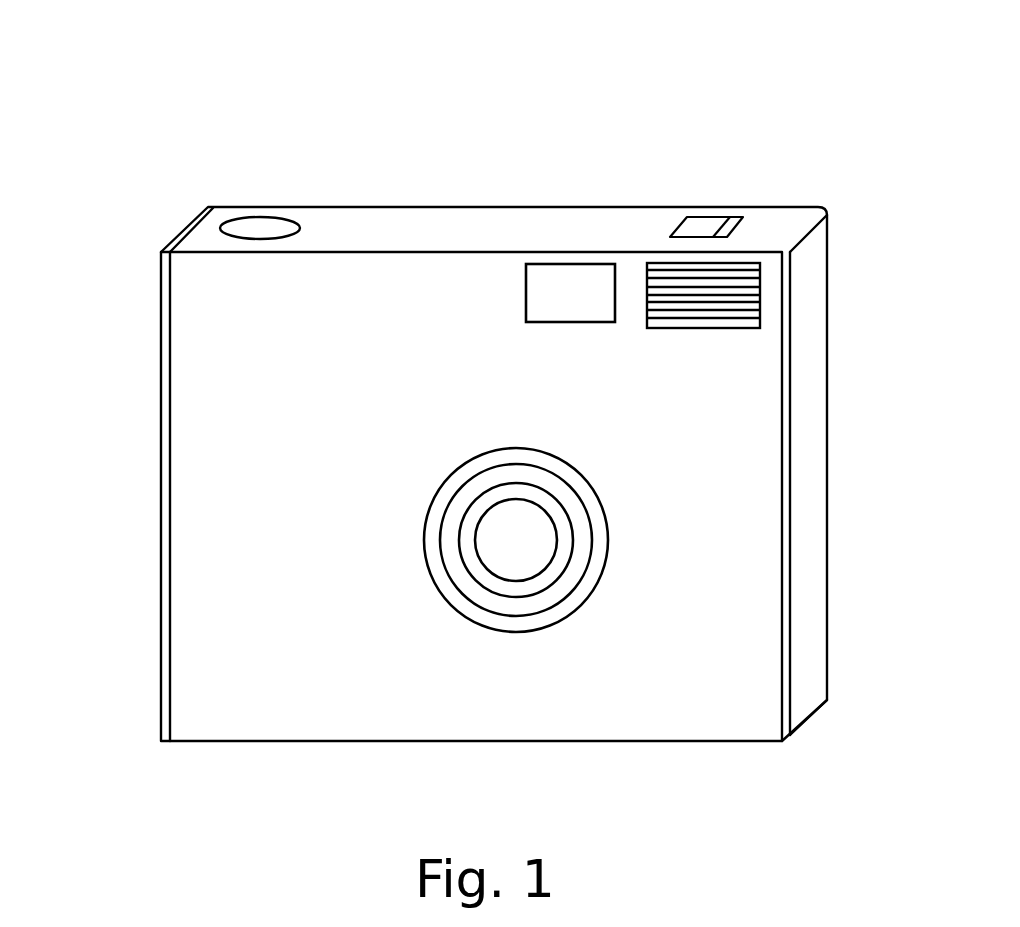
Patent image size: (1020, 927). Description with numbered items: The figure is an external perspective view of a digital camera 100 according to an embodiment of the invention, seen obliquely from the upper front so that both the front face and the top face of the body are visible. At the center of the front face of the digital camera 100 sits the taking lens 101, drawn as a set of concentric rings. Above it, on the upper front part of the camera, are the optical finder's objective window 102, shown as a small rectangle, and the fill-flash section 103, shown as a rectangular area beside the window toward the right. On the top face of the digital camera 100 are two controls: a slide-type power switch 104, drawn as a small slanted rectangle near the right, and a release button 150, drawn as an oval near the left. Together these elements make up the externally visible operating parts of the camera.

The digital camera 100 is at (118, 120).
The taking lens 101 is at (517, 538).
The optical finder's objective window 102 is at (560, 287).
The fill-flash section 103 is at (668, 280).
The slide-type power switch 104 is at (698, 223).
The release button 150 is at (255, 230).